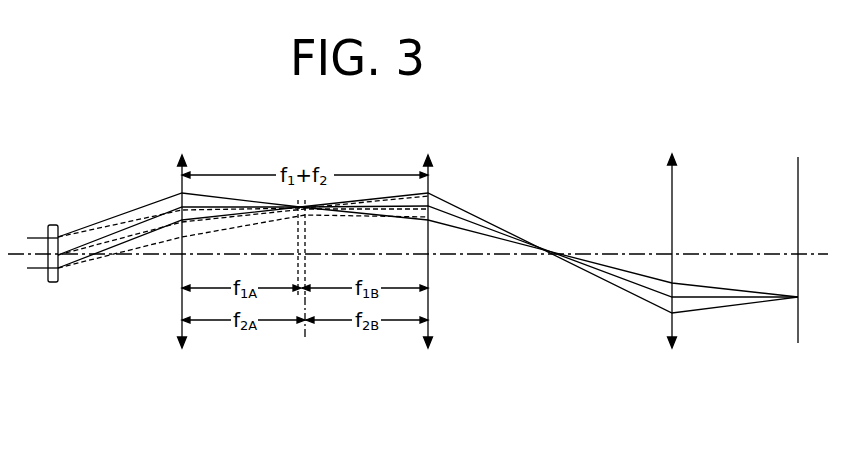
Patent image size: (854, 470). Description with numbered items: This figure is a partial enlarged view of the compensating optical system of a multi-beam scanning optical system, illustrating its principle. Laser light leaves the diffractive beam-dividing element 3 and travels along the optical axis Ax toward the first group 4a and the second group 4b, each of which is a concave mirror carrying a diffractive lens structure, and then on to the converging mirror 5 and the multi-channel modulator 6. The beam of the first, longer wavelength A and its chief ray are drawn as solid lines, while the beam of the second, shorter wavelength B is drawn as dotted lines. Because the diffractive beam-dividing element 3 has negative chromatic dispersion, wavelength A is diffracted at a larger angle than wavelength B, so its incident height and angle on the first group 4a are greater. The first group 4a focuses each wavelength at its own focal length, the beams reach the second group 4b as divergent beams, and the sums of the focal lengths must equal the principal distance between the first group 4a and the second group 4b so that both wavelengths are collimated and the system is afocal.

The diffractive beam-dividing element 3 is at (50, 225).
The first group 4a is at (182, 350).
The second group 4b is at (428, 350).
The converging mirror 5 is at (672, 153).
The multi-channel modulator 6 is at (800, 153).
The first wavelength λ A is at (143, 208).
The second wavelength λ B is at (109, 215).
The optical axis Ax is at (613, 250).